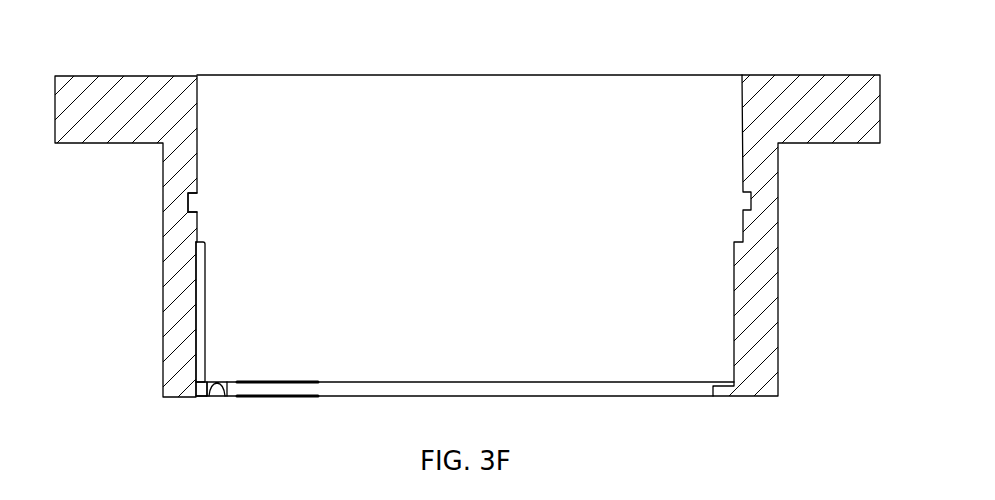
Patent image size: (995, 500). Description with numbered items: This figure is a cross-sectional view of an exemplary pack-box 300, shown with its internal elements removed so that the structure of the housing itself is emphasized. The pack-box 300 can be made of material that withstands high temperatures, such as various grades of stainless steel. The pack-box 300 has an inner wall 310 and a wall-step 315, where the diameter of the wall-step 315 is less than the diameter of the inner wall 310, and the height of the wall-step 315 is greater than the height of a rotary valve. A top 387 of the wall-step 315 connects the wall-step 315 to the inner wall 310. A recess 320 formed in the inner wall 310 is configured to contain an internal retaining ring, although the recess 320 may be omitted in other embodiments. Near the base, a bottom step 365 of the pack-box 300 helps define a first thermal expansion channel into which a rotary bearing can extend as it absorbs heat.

The pack-box 300 is at (115, 102).
The inner wall 310 is at (199, 117).
The wall-step 315 is at (201, 343).
The recess 320 is at (187, 204).
The bottom step 365 is at (215, 389).
The top of the wall-step 387 is at (196, 246).